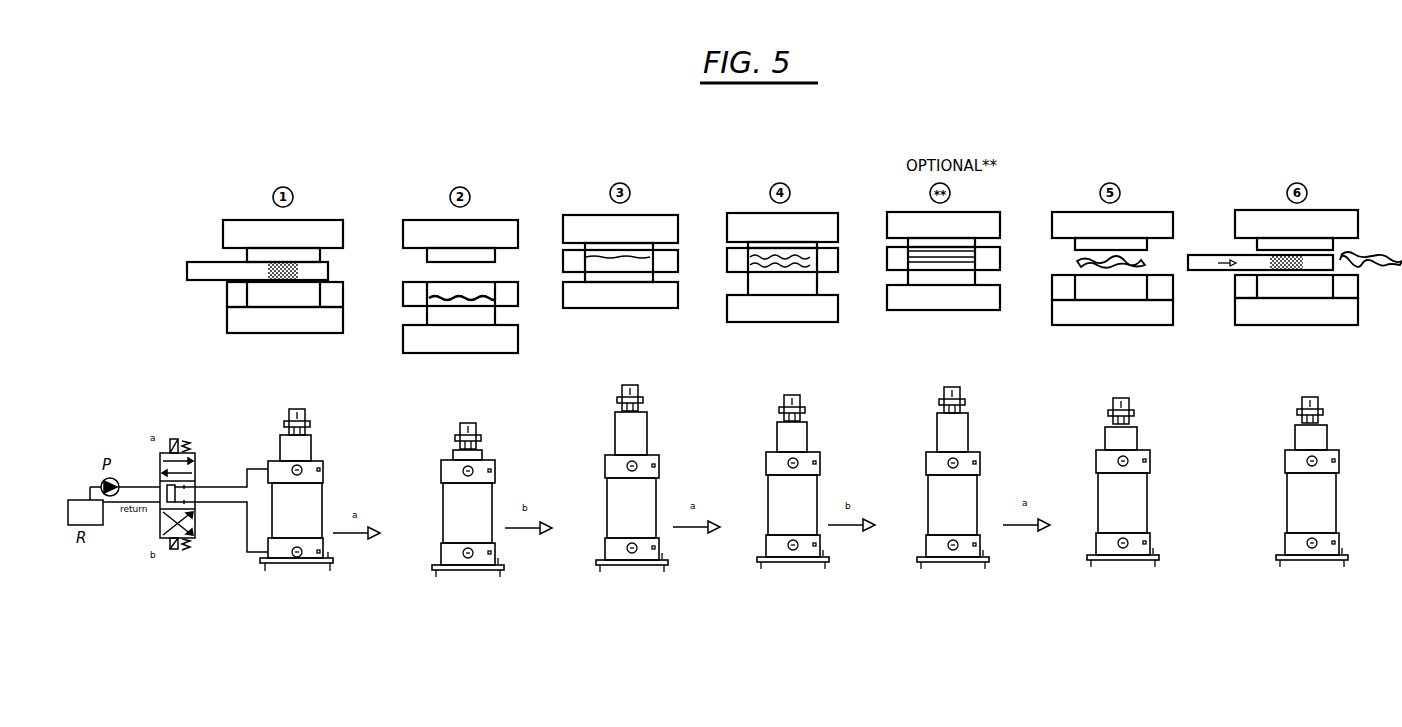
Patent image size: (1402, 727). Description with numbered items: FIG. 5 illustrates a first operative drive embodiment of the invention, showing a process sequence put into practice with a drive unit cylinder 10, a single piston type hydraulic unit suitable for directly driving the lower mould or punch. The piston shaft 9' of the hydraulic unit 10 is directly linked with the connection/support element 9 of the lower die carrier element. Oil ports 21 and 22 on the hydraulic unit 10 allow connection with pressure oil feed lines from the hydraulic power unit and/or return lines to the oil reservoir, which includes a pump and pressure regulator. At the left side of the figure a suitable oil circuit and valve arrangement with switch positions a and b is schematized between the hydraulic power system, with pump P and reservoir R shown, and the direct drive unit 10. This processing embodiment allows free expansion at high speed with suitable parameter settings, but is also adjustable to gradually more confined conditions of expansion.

The connection/support element 9 is at (314, 410).
The piston shaft 9' is at (319, 441).
The hydraulic unit 10 is at (312, 505).
The oil port 21 is at (291, 470).
The oil port 22 is at (297, 557).